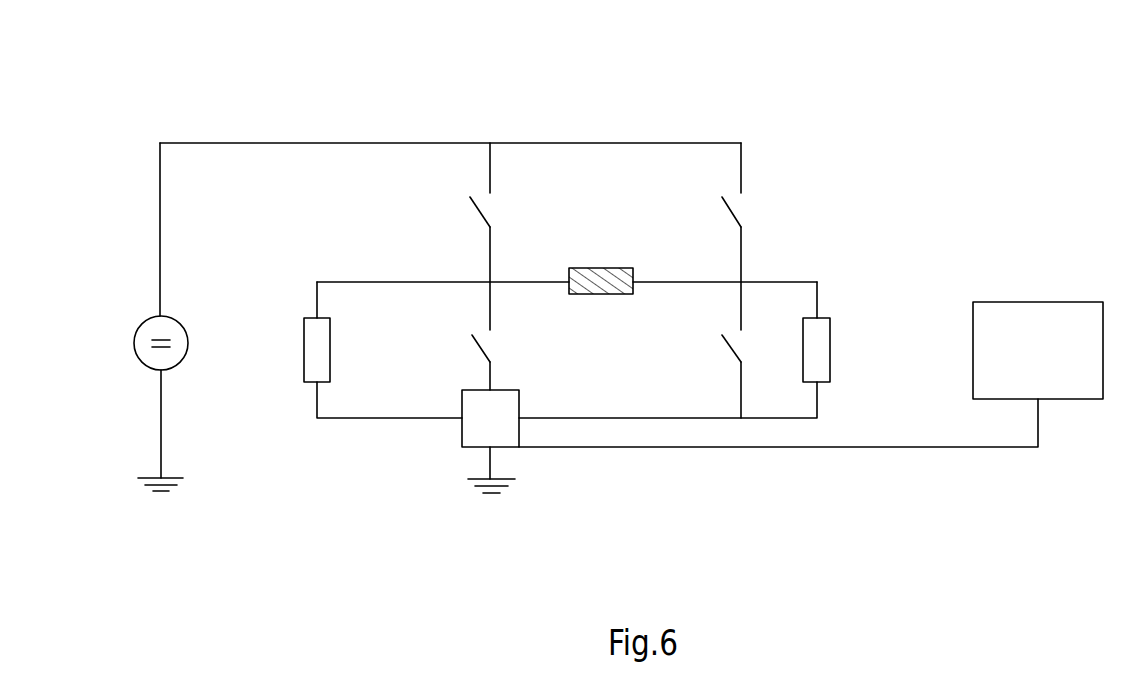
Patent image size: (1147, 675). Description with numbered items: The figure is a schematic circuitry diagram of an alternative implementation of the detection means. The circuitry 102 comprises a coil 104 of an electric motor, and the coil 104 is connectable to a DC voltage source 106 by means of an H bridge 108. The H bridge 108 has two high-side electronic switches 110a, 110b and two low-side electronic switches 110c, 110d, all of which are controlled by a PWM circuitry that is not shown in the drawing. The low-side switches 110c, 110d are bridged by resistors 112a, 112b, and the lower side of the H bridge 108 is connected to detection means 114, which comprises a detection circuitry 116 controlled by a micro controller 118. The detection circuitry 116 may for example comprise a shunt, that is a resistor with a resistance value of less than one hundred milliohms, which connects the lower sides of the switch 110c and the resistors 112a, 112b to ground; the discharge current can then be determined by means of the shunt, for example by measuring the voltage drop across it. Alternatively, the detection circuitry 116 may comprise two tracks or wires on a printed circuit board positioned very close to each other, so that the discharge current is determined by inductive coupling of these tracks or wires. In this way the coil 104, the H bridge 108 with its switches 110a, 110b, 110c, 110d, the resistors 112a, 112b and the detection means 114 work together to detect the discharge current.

The circuitry 102 is at (1013, 122).
The coil 104 is at (590, 268).
The DC voltage source 106 is at (144, 318).
The H bridge 108 is at (452, 268).
The high-side electronic switch 110a is at (480, 212).
The high-side electronic switch 110b is at (729, 212).
The low-side electronic switch 110c is at (481, 349).
The low-side electronic switch 110d is at (730, 350).
The resistor 112a is at (304, 334).
The resistor 112b is at (831, 334).
The detection means 114 is at (855, 472).
The detection circuitry 116 is at (507, 430).
The micro controller 118 is at (1057, 362).